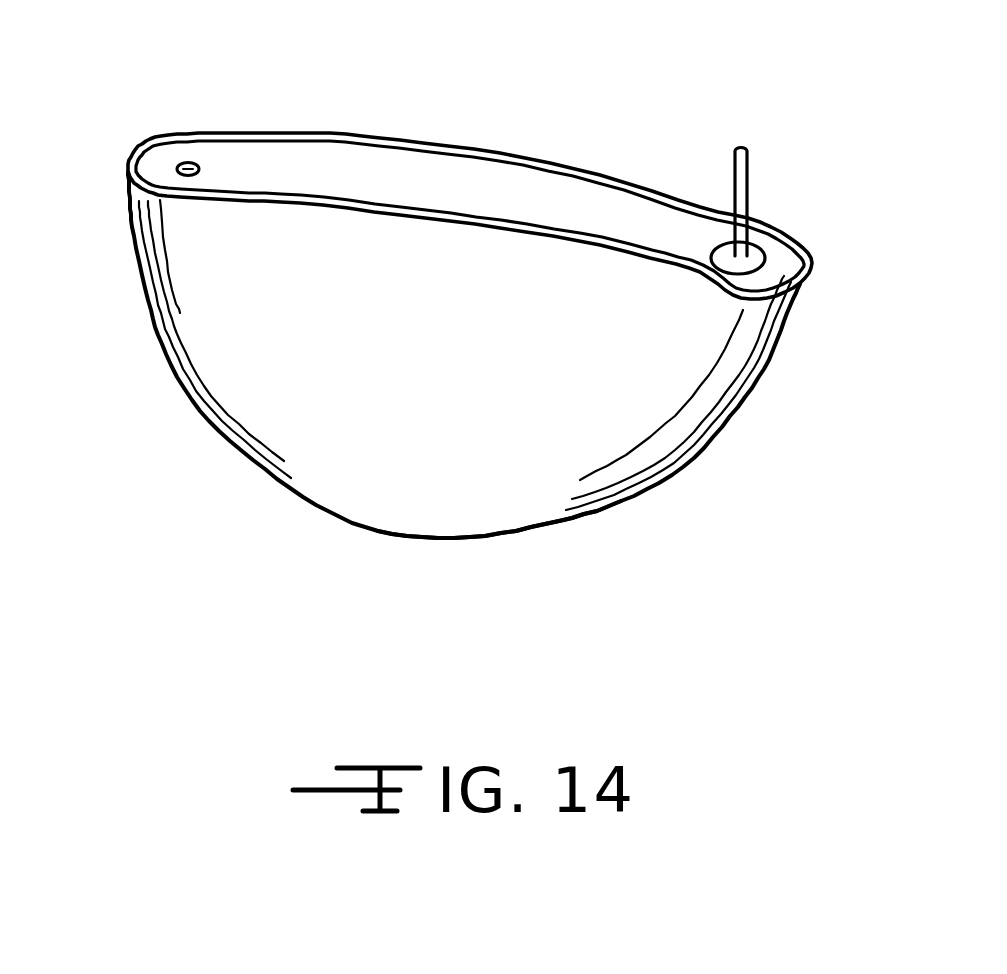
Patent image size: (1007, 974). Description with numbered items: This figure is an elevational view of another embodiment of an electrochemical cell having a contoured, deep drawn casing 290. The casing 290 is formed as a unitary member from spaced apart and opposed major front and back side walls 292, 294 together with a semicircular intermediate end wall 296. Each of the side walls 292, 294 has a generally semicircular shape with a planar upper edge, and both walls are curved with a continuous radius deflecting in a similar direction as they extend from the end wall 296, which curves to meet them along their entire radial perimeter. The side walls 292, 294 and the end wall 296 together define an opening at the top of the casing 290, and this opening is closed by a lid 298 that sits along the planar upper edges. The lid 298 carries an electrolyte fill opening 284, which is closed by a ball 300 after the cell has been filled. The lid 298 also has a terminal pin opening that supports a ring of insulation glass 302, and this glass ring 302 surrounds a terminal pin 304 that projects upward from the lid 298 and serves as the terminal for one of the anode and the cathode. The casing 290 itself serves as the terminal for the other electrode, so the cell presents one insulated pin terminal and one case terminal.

The electrolyte fill opening 284 is at (158, 148).
The contoured casing 290 is at (840, 207).
The front side wall 292 is at (270, 437).
The back side wall 294 is at (458, 150).
The intermediate end wall 296 is at (563, 522).
The lid 298 is at (321, 163).
The ball 300 is at (188, 166).
The ring of insulation glass 302 is at (760, 262).
The terminal pin 304 is at (748, 165).